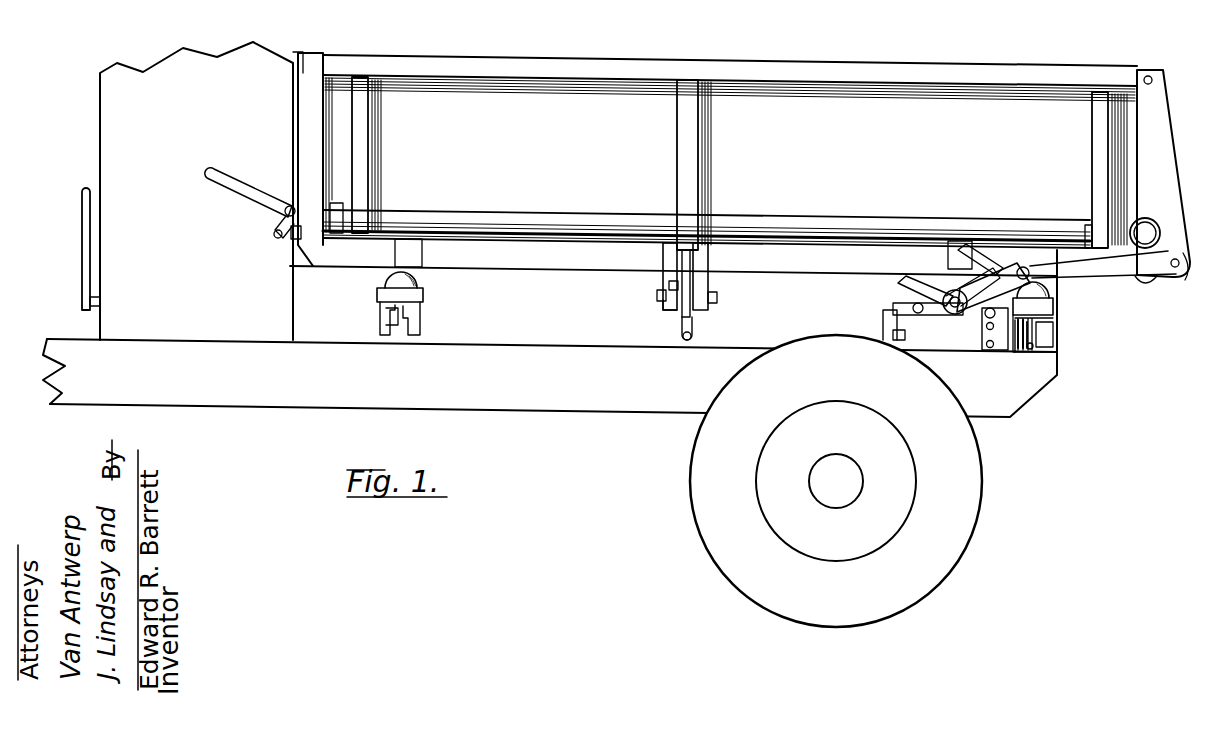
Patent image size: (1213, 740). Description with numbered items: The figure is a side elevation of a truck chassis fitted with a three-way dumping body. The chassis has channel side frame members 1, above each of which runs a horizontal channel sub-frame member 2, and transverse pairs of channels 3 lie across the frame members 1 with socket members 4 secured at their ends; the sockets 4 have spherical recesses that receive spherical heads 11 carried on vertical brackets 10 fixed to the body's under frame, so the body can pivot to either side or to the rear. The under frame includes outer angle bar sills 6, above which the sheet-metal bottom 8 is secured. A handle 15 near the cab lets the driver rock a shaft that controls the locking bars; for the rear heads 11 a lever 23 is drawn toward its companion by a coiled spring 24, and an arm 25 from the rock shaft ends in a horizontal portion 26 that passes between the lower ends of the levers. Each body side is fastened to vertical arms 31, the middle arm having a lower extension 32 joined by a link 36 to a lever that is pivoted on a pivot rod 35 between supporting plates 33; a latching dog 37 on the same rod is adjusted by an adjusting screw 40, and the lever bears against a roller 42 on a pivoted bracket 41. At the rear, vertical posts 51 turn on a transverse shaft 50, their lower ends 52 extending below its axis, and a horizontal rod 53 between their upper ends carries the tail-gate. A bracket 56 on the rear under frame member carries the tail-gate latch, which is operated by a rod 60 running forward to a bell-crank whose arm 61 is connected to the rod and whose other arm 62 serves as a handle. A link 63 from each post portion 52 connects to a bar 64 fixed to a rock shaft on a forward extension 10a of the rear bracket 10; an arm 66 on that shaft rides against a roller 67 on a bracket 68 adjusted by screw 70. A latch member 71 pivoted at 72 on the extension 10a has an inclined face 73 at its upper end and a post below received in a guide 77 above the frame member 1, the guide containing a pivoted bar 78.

The side chassis frame member 1 is at (530, 405).
The sub-frame member 2 is at (575, 335).
The transverse pair of channels 3 is at (413, 330).
The socket member 4 is at (423, 293).
The angle bar sill 6 is at (577, 253).
The bottom 8 is at (762, 105).
The vertical bracket 10 is at (398, 253).
The forward extension 10a is at (955, 266).
The spherical head 11 is at (387, 284).
The handle 15 is at (88, 228).
The lever 23 is at (1025, 350).
The coiled spring 24 is at (1031, 350).
The arm 25 is at (1018, 353).
The horizontal portion 26 is at (1036, 333).
The vertical arm 31 is at (362, 157).
The lower extension 32 is at (703, 231).
The supporting plate 33 is at (709, 283).
The pivot rod 35 is at (716, 298).
The link 36 is at (692, 261).
The latching dog 37 is at (670, 307).
The adjusting screw 40 is at (670, 284).
The bracket 41 is at (693, 325).
The roller 42 is at (684, 345).
The transverse horizontal shaft 50 is at (1158, 222).
The vertical post 51 is at (1158, 139).
The lower end of post 52 is at (1182, 272).
The horizontal rod 53 is at (1148, 76).
The bracket 56 is at (1141, 284).
The rod 60 is at (289, 240).
The bell-crank arm 61 is at (273, 229).
The handle 62 is at (248, 190).
The link 63 is at (1163, 278).
The bar 64 is at (1008, 265).
The arm 66 is at (913, 286).
The roller 67 is at (918, 314).
The bracket 68 is at (890, 310).
The screw 70 is at (902, 341).
The latch member 71 is at (960, 264).
The pivot 72 is at (970, 296).
The inclined face 73 is at (983, 253).
The guide 77 is at (997, 350).
The bar 78 is at (988, 318).